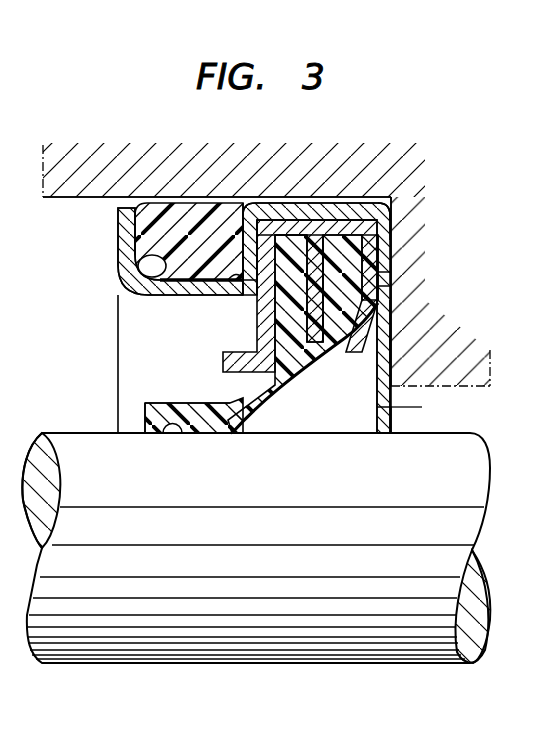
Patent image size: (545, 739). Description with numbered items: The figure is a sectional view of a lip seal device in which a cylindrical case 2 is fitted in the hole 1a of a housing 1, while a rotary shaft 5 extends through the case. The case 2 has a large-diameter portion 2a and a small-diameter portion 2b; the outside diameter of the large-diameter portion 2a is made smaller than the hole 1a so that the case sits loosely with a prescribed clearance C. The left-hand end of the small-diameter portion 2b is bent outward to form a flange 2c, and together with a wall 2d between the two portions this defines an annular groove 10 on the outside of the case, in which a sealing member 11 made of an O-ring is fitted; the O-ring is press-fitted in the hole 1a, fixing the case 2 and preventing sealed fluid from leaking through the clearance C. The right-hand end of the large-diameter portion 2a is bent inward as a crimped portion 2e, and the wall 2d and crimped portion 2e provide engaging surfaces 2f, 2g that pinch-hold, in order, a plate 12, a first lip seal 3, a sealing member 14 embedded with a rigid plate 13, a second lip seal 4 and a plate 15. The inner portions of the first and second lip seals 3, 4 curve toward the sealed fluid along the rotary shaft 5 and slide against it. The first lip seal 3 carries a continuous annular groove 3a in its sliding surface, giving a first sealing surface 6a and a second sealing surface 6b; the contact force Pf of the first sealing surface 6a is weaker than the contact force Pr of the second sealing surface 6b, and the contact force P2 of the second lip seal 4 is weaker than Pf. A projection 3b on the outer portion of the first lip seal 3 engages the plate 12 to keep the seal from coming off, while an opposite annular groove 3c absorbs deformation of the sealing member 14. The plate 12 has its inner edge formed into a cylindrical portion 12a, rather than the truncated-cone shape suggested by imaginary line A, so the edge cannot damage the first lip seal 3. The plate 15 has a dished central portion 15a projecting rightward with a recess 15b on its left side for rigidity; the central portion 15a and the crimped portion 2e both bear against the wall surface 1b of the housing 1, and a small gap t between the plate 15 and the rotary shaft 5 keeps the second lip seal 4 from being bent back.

The housing 1 is at (460, 389).
The hole of the housing 1a is at (78, 197).
The wall surface of the housing 1b is at (393, 262).
The cylindrical case 2 is at (112, 232).
The large-diameter portion 2a is at (312, 203).
The small-diameter portion 2b is at (178, 297).
The flange 2c is at (127, 207).
The wall 2d is at (244, 208).
The crimped portion 2e is at (386, 318).
The engaging surface 2f is at (248, 272).
The engaging surface 2g is at (386, 280).
The first lip seal 3 is at (138, 415).
The annular groove 3a is at (172, 435).
The projection 3b is at (265, 221).
The annular groove 3c is at (308, 236).
The second lip seal 4 is at (351, 431).
The rotary shaft 5 is at (460, 530).
The first sealing surface 6a is at (148, 435).
The second sealing surface 6b is at (190, 435).
The annular groove 10 is at (140, 264).
The sealing member 11 is at (176, 204).
The plate 12 is at (236, 284).
The cylindrical portion 12a is at (240, 435).
The rigid plate 13 is at (333, 240).
The sealing member 14 is at (362, 222).
The plate 15 is at (382, 240).
The central portion 15a is at (389, 355).
The recess 15b is at (380, 435).
The imaginary line A is at (277, 435).
The tight contact force Pf is at (158, 424).
The contact force Pr is at (200, 424).
The tight contact force P2 is at (290, 440).
The clearance C is at (370, 224).
The gap t is at (415, 392).